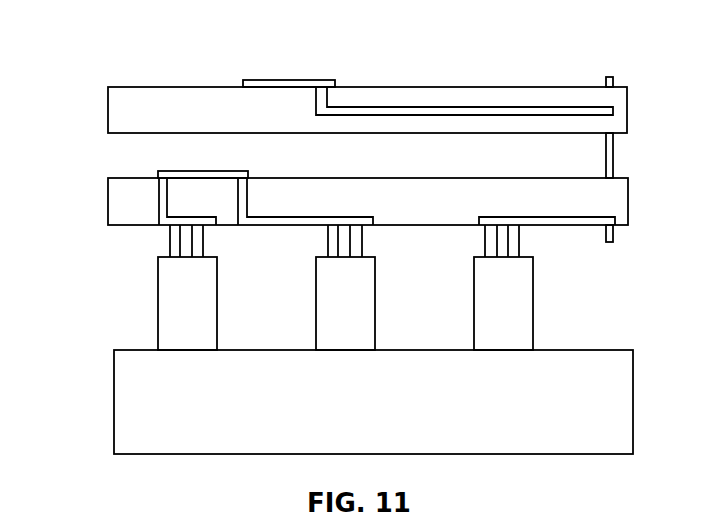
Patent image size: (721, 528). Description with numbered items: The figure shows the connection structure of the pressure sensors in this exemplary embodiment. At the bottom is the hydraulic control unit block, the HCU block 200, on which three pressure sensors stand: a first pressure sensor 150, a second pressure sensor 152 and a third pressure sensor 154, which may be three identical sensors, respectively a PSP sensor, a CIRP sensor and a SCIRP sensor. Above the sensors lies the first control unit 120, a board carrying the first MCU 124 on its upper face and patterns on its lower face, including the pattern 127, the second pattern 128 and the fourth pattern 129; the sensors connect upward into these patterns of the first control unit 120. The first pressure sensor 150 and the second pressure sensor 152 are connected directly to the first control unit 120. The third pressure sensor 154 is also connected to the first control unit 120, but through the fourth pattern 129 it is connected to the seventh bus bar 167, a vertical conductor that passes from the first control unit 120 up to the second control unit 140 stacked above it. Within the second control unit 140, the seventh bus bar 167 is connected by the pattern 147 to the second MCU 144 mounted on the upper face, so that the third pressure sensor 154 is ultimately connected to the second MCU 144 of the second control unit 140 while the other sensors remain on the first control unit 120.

The second control unit 140 is at (117, 108).
The second MCU 144 is at (273, 80).
The pattern 147 is at (433, 110).
The seventh bus bar 167 is at (613, 152).
The first control unit 120 is at (117, 207).
The first MCU 124 is at (183, 172).
The bottom contact pad 127 is at (167, 222).
The second pattern 128 is at (300, 220).
The fourth pattern 129 is at (573, 226).
The first pressure sensor 150 is at (163, 329).
The second pressure sensor 152 is at (327, 329).
The third pressure sensor 154 is at (485, 329).
The HCU block 200 is at (123, 419).